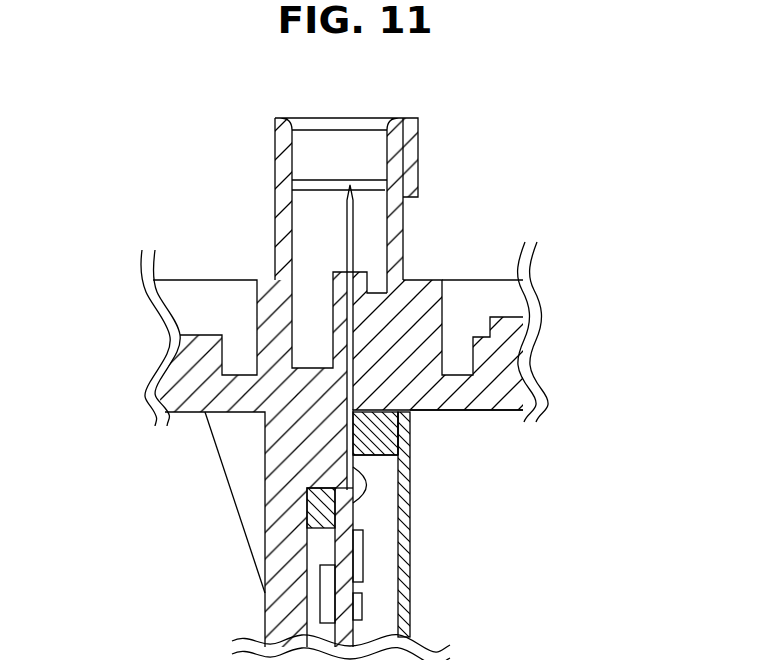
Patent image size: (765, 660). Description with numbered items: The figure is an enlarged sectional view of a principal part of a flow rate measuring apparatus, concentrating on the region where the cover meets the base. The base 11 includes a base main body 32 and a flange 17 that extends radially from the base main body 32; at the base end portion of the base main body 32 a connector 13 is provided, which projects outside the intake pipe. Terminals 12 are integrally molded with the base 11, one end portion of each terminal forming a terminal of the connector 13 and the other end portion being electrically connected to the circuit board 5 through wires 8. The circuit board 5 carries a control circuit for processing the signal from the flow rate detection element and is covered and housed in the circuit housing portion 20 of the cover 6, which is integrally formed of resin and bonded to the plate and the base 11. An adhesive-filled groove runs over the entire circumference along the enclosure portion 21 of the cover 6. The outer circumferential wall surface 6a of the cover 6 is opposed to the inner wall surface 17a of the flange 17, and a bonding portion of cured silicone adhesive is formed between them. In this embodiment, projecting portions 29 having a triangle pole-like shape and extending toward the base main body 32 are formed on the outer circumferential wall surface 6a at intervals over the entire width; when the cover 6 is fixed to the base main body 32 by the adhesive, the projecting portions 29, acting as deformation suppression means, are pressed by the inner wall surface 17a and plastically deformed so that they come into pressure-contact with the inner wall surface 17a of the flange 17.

The circuit board 5 is at (343, 607).
The cover 6 is at (407, 560).
The outer circumferential wall surface 6a is at (410, 452).
The wires 8 is at (373, 488).
The base 11 is at (282, 488).
The terminals 12 is at (445, 297).
The connector 13 is at (280, 167).
The flange 17 is at (512, 355).
The inner wall surface 17a is at (437, 412).
The circuit housing portion 20 is at (380, 602).
The enclosure portion 21 is at (402, 460).
The projecting portions 29 is at (412, 413).
The base main body 32 is at (277, 538).